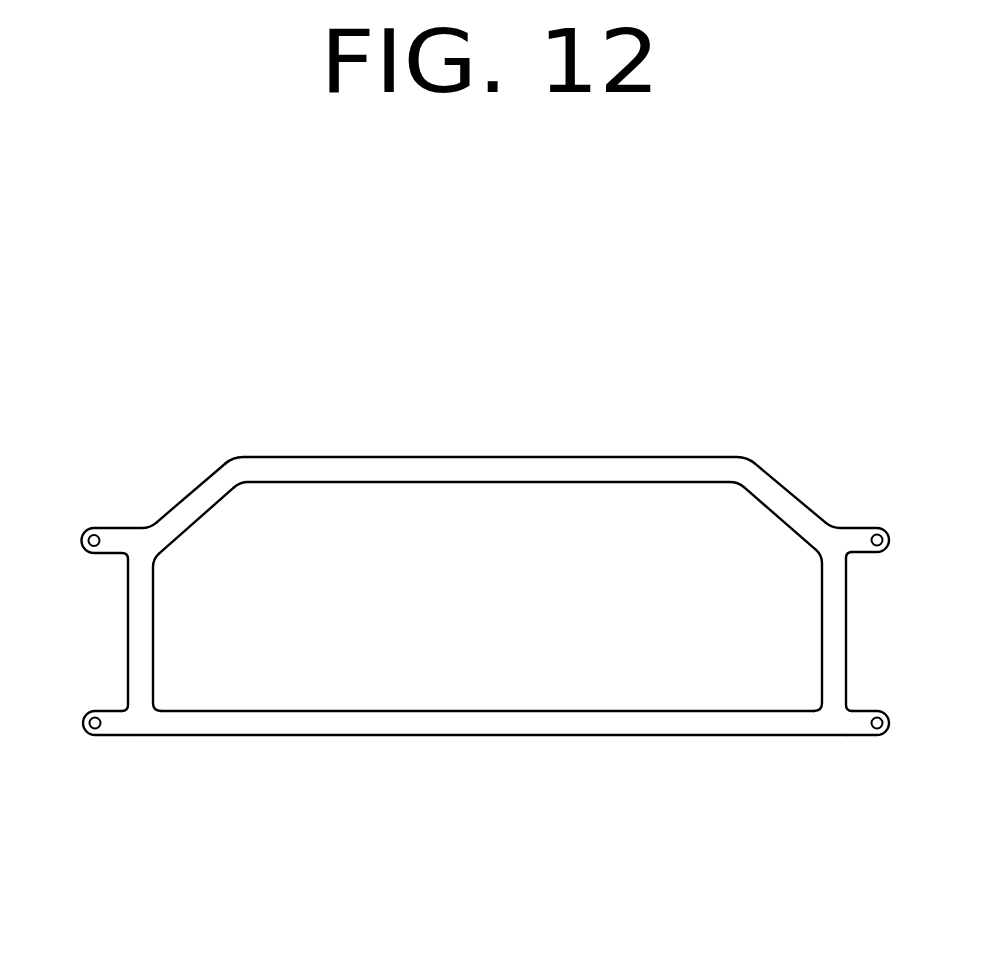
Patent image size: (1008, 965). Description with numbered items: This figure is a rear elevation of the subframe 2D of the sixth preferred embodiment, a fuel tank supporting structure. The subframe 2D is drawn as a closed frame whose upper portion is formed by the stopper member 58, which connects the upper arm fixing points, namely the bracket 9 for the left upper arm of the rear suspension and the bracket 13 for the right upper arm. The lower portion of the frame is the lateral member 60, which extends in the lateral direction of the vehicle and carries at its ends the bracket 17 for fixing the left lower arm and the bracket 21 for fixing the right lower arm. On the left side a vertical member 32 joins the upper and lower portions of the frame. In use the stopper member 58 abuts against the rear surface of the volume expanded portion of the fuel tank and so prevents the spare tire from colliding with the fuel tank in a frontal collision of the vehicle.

The subframe 2D is at (524, 424).
The stopper member 58 is at (443, 457).
The lateral member 60 is at (474, 732).
The vertical member 32 is at (138, 630).
The bracket 9 is at (93, 534).
The bracket 13 is at (873, 533).
The bracket 17 is at (95, 736).
The bracket 21 is at (878, 736).